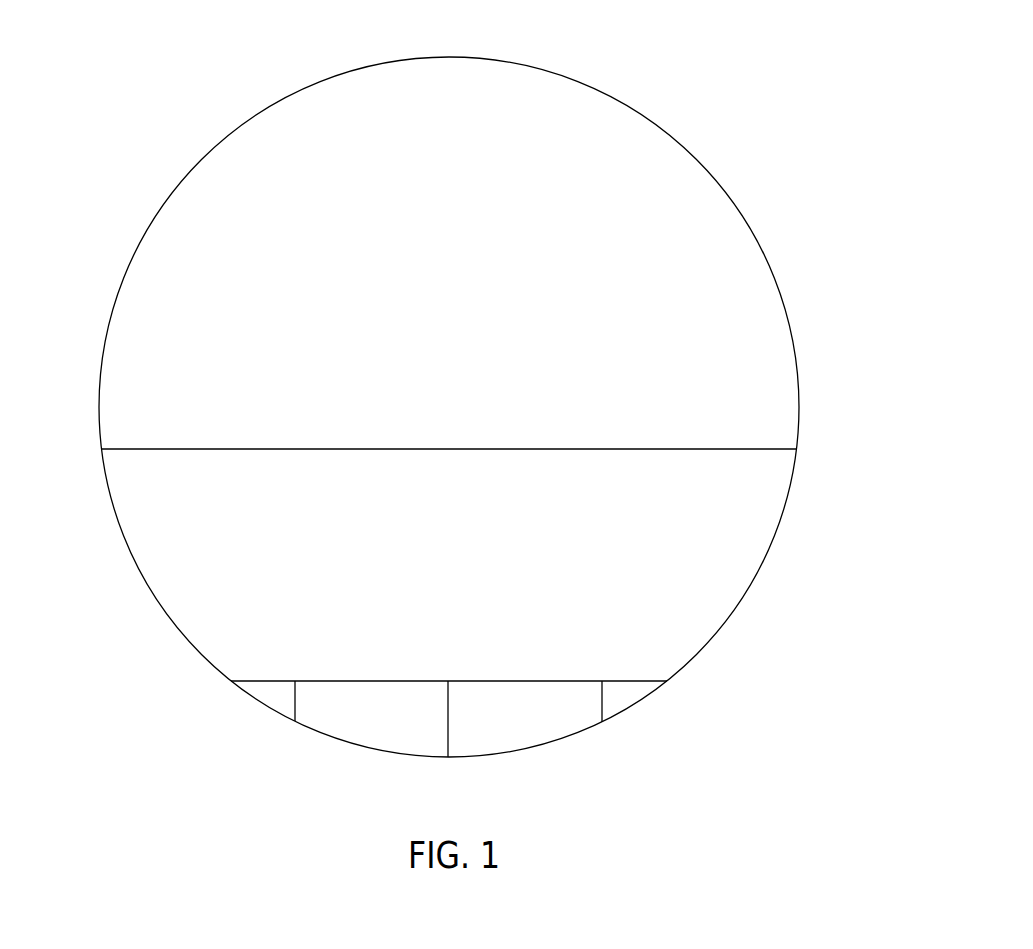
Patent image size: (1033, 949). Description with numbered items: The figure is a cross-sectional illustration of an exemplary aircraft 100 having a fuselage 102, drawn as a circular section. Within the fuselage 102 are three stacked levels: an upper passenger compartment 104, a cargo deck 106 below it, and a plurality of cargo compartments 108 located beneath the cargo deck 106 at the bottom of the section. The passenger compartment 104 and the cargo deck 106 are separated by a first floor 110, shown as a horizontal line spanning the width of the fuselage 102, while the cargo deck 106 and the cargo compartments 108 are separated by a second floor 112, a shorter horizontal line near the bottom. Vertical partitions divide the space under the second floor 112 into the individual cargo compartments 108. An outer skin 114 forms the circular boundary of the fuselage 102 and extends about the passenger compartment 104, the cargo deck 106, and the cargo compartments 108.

The aircraft 100 is at (775, 52).
The fuselage 102 is at (755, 137).
The passenger compartment 104 is at (471, 288).
The cargo deck 106 is at (453, 579).
The cargo compartments 108 is at (405, 725).
The first floor 110 is at (620, 449).
The second floor 112 is at (635, 681).
The outer skin 114 is at (672, 692).